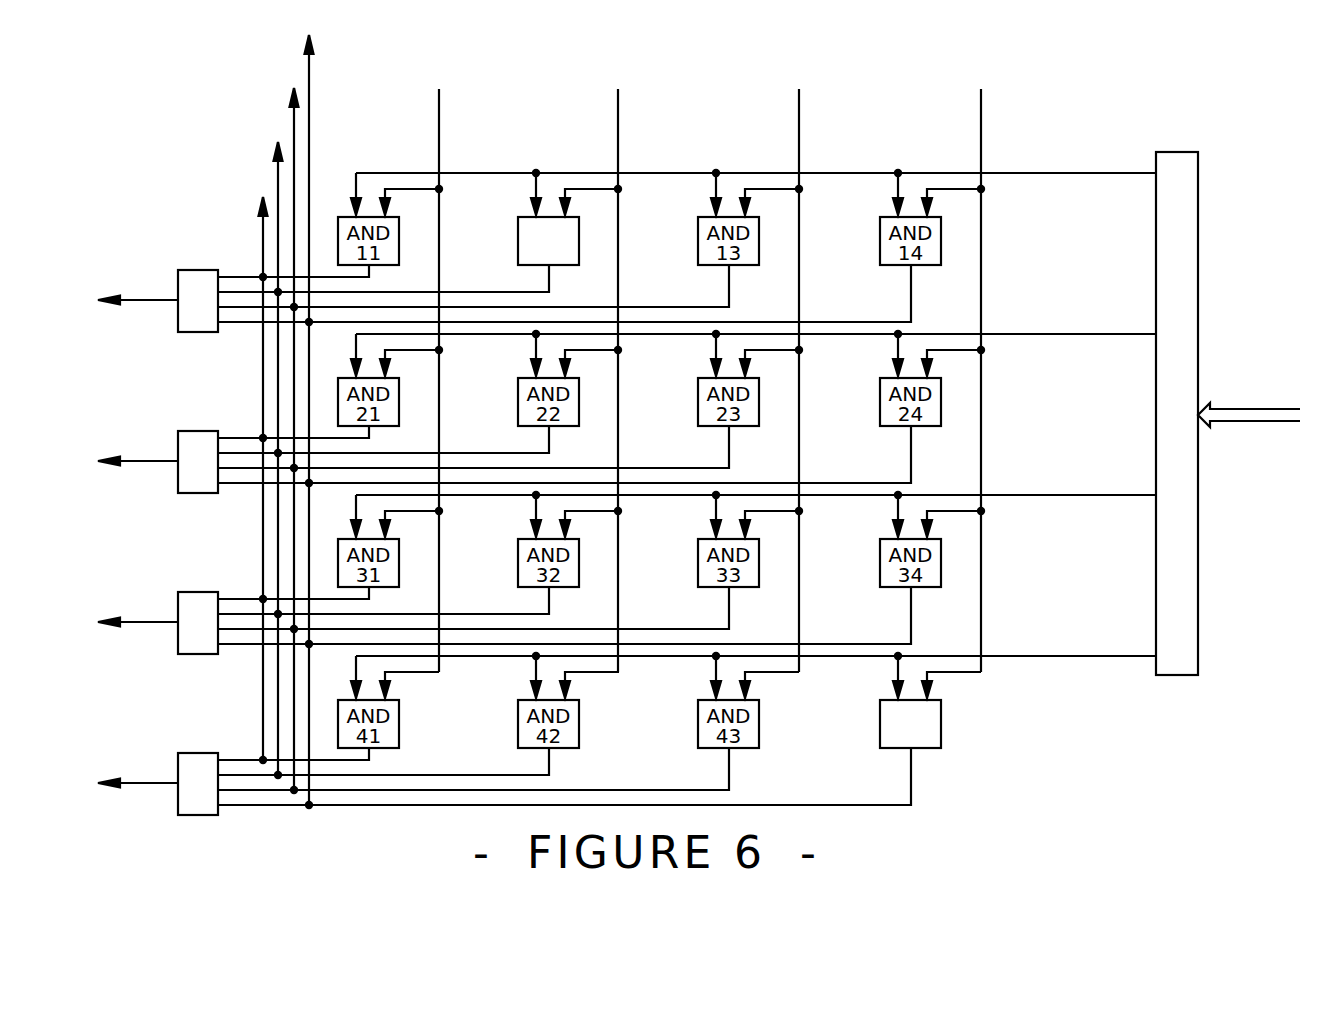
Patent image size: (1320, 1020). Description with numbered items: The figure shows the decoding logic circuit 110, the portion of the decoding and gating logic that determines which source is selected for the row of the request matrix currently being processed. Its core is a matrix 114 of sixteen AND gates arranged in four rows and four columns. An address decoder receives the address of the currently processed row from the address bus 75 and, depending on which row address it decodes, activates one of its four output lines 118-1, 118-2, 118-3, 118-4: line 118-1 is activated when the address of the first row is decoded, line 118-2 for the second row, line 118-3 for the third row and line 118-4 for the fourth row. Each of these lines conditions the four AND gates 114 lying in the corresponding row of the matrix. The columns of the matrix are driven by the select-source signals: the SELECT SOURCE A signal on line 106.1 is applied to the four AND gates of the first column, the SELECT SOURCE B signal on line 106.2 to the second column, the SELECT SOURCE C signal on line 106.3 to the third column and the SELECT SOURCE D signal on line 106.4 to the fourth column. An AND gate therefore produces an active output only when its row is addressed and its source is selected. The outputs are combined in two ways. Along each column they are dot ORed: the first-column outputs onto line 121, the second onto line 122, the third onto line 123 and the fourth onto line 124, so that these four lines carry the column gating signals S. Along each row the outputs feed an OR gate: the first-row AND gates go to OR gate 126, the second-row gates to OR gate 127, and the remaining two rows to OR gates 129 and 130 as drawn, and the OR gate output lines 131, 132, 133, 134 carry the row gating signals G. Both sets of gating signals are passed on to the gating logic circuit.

The address bus 75 is at (1228, 413).
The SELECT SOURCE A signal line 106.1 is at (454, 354).
The SELECT SOURCE B signal line 106.2 is at (633, 354).
The SELECT SOURCE C signal line 106.3 is at (814, 354).
The SELECT SOURCE D signal line 106.4 is at (996, 354).
The decoding logic circuit 110 is at (966, 705).
The AND gate matrix 114 is at (508, 270).
The decoder output line 118-1 is at (756, 173).
The decoder output line 118-2 is at (756, 334).
The decoder output line 118-3 is at (756, 495).
The decoder output line 118-4 is at (756, 656).
The dot-OR line 121 is at (251, 475).
The dot-OR line 122 is at (269, 458).
The dot-OR line 123 is at (284, 439).
The dot-OR line 124 is at (299, 420).
The OR gate 126 is at (199, 317).
The OR gate 127 is at (199, 478).
The OR gate 129 is at (199, 639).
The OR gate 130 is at (199, 800).
The OR gate output G1 131 is at (115, 292).
The OR gate output line 132 is at (115, 453).
The OR gate output line 133 is at (115, 614).
The OR gate output line 134 is at (115, 775).